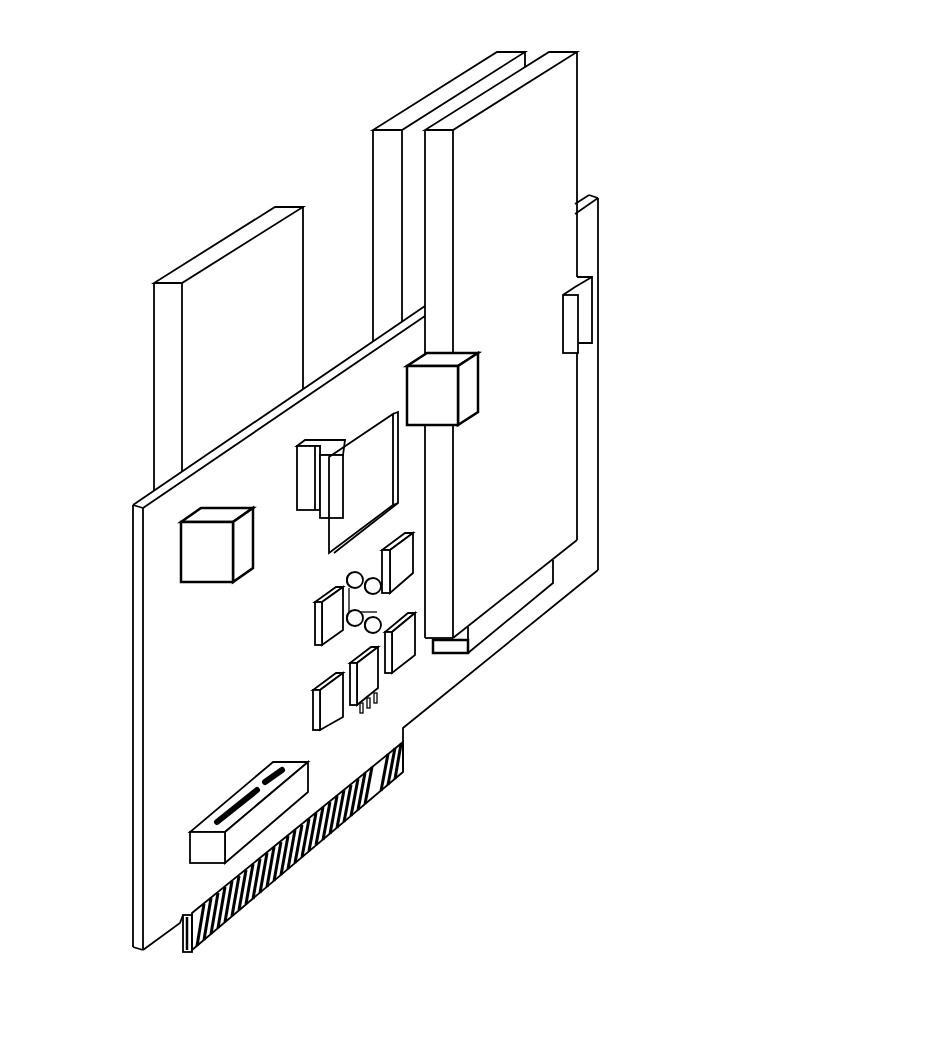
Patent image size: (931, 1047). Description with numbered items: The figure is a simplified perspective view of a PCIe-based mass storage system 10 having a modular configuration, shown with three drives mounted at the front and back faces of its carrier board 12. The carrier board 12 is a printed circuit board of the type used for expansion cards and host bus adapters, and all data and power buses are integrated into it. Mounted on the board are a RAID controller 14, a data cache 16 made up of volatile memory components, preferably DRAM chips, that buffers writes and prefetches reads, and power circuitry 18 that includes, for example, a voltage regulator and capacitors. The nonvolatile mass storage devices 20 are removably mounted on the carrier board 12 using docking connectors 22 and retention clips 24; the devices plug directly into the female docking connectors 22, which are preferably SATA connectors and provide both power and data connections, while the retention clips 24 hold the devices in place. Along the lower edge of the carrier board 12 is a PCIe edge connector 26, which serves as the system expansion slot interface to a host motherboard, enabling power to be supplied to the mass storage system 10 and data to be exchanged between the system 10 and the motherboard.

The mass storage system 10 is at (703, 63).
The carrier board 12 is at (158, 768).
The RAID controller 14 is at (386, 496).
The data cache 16 is at (386, 643).
The power circuitry 18 is at (370, 683).
The mass storage devices 20 is at (460, 115).
The docking connectors 22 is at (565, 638).
The retention clips 24 is at (210, 530).
The PCIe edge connector 26 is at (333, 838).